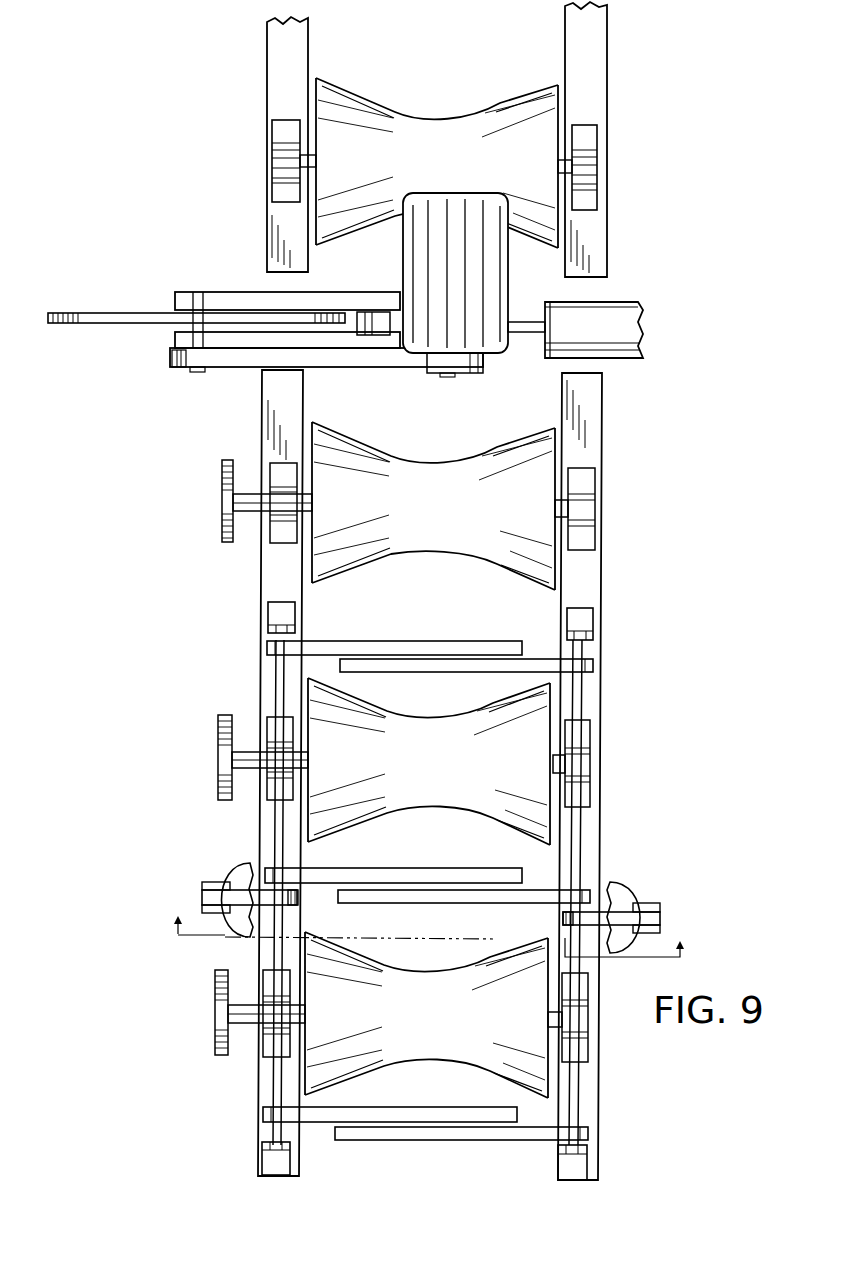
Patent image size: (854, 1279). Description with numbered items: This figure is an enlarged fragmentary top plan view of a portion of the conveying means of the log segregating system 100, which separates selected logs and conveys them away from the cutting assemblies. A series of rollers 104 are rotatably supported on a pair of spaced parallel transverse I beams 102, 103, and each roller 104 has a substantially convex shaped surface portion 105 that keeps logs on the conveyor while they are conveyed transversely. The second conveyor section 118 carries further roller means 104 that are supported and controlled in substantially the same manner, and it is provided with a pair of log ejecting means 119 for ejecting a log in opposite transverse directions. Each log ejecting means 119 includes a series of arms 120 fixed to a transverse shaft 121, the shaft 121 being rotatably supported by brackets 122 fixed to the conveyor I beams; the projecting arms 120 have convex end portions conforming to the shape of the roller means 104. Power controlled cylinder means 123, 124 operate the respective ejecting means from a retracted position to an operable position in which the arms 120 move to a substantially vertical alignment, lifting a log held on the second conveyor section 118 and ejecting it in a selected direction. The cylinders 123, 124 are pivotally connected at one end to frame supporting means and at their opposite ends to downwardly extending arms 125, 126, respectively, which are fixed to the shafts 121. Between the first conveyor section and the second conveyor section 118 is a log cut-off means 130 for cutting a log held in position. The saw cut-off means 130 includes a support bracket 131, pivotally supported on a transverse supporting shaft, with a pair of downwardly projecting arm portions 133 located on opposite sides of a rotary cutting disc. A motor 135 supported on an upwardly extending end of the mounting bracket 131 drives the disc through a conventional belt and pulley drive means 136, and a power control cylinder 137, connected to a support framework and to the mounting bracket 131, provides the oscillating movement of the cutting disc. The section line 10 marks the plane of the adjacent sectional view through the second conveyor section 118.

The log segregating system 100 is at (263, 243).
The transverse I beam 102 is at (598, 75).
The transverse I beam 103 is at (307, 59).
The roller 104 is at (431, 588).
The convex shaped surface portion 105 is at (438, 120).
The second conveyor section 118 is at (261, 577).
The log ejecting means 119 is at (423, 892).
The arm 120 is at (368, 640).
The transverse shaft 121 is at (402, 892).
The bracket 122 is at (272, 617).
The power controlled cylinder means 123 is at (237, 867).
The power controlled cylinder means 124 is at (637, 888).
The downwardly extending arm 125 is at (293, 890).
The downwardly extending arm 126 is at (563, 917).
The log cut-off means 130 is at (128, 312).
The support bracket 131 is at (224, 305).
The downwardly projecting arm portion 133 is at (218, 297).
The motor 135 is at (505, 288).
The belt and pulley drive means 136 is at (407, 367).
The power control cylinder 137 is at (632, 307).
The section line 10- 10 is at (428, 930).